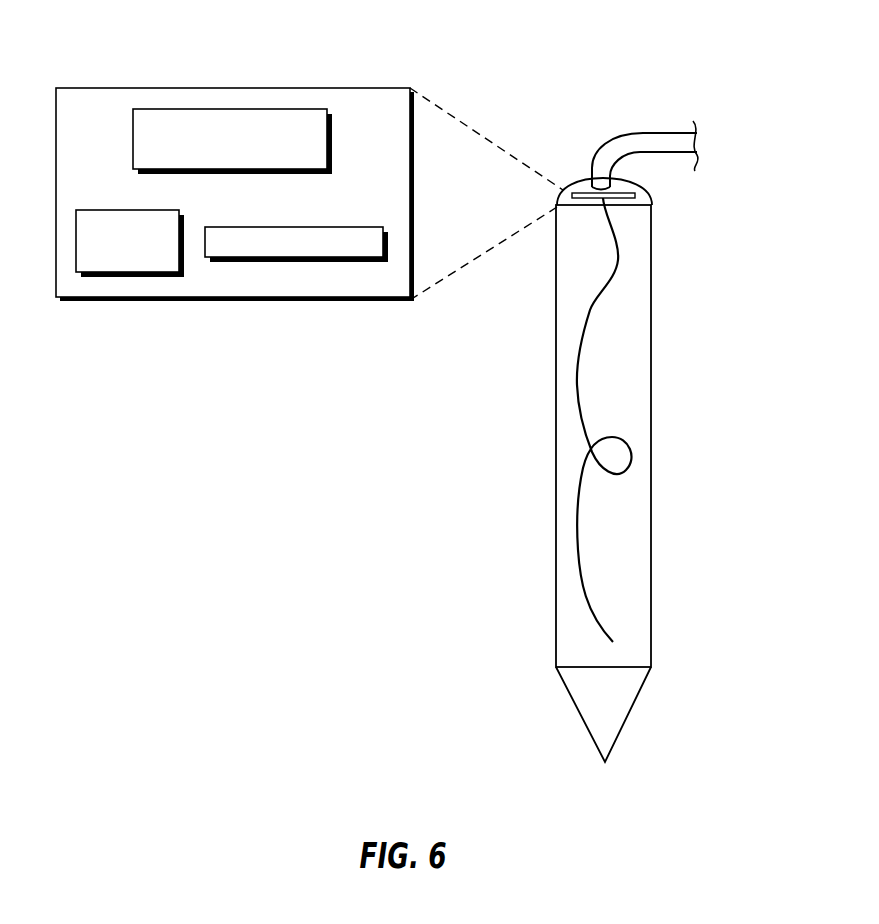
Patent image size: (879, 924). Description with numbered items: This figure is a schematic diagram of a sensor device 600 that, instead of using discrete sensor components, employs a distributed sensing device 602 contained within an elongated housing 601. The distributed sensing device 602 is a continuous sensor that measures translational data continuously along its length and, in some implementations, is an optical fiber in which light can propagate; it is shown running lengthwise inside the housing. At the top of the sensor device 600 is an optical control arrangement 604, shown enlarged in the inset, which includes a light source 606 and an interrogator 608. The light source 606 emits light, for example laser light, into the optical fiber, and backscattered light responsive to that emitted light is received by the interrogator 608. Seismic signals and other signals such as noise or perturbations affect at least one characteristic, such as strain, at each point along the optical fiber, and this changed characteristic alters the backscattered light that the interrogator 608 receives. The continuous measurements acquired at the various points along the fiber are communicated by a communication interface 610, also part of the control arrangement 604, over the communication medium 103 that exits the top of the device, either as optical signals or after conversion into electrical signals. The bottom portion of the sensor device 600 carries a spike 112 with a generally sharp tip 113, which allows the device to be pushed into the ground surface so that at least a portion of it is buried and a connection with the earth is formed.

The sensor device 600 is at (611, 501).
The elongated housing 601 is at (556, 465).
The distributed sensing device 602 is at (577, 385).
The optical control arrangement 604 is at (127, 87).
The light source 606 is at (155, 210).
The interrogator 608 is at (311, 227).
The communication interface 610 is at (230, 109).
The communication medium 103 is at (665, 132).
The spike 112 is at (577, 715).
The sharp tip 113 is at (605, 762).